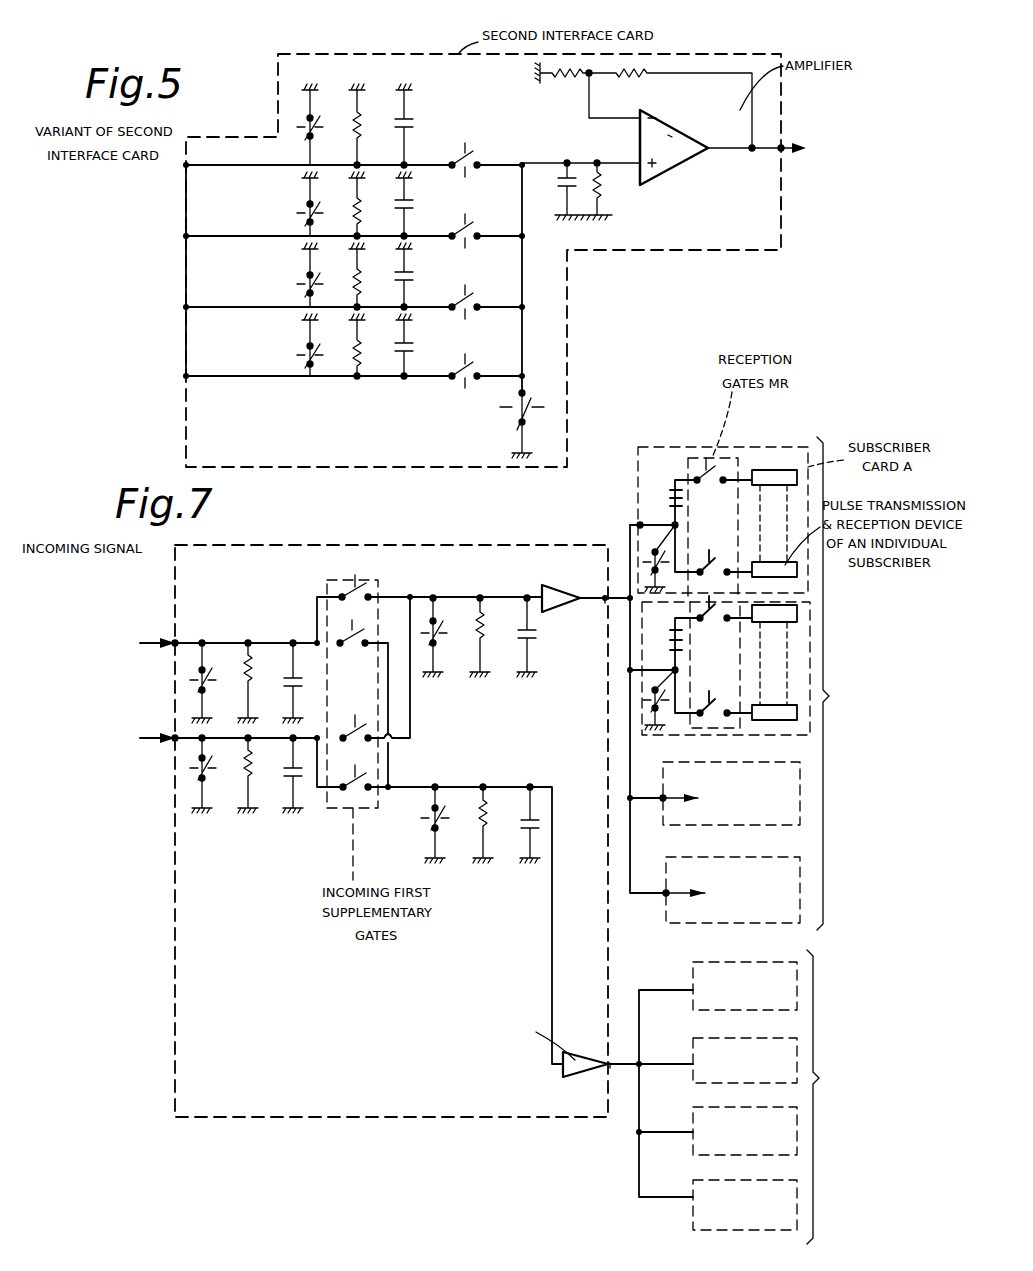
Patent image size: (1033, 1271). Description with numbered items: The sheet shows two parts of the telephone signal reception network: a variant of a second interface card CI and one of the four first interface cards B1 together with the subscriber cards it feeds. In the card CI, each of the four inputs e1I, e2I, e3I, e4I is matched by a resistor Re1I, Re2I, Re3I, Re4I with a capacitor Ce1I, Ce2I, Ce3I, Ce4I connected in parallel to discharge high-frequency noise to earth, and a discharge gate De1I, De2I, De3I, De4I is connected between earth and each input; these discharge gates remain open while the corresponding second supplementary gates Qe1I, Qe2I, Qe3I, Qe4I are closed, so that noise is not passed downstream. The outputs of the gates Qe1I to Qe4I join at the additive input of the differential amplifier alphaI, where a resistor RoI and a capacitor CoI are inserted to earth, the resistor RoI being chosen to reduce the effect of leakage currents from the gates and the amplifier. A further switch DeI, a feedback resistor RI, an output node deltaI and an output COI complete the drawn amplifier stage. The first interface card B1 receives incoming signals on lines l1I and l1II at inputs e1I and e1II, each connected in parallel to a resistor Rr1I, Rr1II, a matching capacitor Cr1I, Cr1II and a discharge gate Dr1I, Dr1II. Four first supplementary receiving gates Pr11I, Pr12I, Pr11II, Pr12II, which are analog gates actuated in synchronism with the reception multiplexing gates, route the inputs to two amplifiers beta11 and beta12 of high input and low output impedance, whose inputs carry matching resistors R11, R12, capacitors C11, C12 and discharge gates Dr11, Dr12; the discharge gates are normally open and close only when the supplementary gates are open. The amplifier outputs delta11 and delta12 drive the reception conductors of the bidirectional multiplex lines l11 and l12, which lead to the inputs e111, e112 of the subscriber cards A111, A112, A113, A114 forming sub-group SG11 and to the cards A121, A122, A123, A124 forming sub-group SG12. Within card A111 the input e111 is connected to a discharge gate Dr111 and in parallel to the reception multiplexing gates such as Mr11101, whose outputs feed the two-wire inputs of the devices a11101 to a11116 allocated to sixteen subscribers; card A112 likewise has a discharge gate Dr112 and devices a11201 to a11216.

In FIG. 5, the input e1I is at (190, 170).
In FIG. 7, the input e1I is at (178, 640).
In FIG. 5, the input e2I is at (190, 241).
In FIG. 5, the input e3I is at (190, 312).
In FIG. 5, the input e4I is at (190, 381).
In FIG. 5, the discharge gate De1I is at (300, 125).
In FIG. 5, the discharge gate De2I is at (302, 210).
In FIG. 5, the discharge gate De3I is at (302, 281).
In FIG. 5, the discharge gate De4I is at (302, 350).
In FIG. 5, the resistor Re1I is at (362, 115).
In FIG. 5, the resistor Re2I is at (362, 195).
In FIG. 5, the resistor Re3I is at (362, 265).
In FIG. 5, the resistor Re4I is at (362, 338).
In FIG. 5, the capacitor Ce1I is at (410, 118).
In FIG. 5, the capacitor Ce2I is at (410, 204).
In FIG. 5, the capacitor Ce3I is at (409, 276).
In FIG. 5, the capacitor Ce4I is at (410, 347).
In FIG. 5, the second supplementary gate Qe1I is at (472, 158).
In FIG. 5, the second supplementary gate Qe2I is at (472, 228).
In FIG. 5, the second supplementary gate Qe3I is at (472, 298).
In FIG. 5, the second supplementary gate Qe4I is at (472, 366).
In FIG. 5, the switch DeI is at (514, 410).
In FIG. 5, the feedback resistor RI is at (614, 80).
In FIG. 5, the differential amplifier alphaI is at (675, 172).
In FIG. 5, the amplifier output delta I deltaI is at (668, 135).
In FIG. 5, the capacitor CoI is at (560, 178).
In FIG. 5, the resistor RoI is at (604, 192).
In FIG. 5, the output COI is at (763, 138).
In FIG. 5, the second interface card CI is at (782, 205).
In FIG. 7, the first interface card B1 is at (272, 545).
In FIG. 7, the incoming line l1I is at (150, 650).
In FIG. 7, the incoming line l1II is at (152, 745).
In FIG. 7, the input e1II is at (176, 737).
In FIG. 7, the discharge gate Dr1I is at (208, 650).
In FIG. 7, the resistor Rr1I is at (254, 650).
In FIG. 7, the matching capacitor Cr1I is at (298, 670).
In FIG. 7, the switch Dr1II is at (212, 775).
In FIG. 7, the resistor Rr1II is at (256, 770).
In FIG. 7, the capacitor Cr1II is at (300, 775).
In FIG. 7, the first supplementary receiving gate Pr11I is at (366, 577).
In FIG. 7, the first supplementary receiving gate Pr12I is at (365, 624).
In FIG. 7, the first supplementary receiving gate Pr11II is at (362, 726).
In FIG. 7, the first supplementary receiving gate Pr12II is at (365, 778).
In FIG. 7, the discharge gate Dr11 is at (432, 620).
In FIG. 7, the matching resistor R11 is at (475, 620).
In FIG. 7, the capacitor C11 is at (522, 625).
In FIG. 7, the amplifier beta11 is at (558, 604).
In FIG. 7, the amplifier output delta 11 delta11 is at (604, 597).
In FIG. 7, the bidirectional multiplex line l11 is at (607, 604).
In FIG. 7, the discharge gate Dr12 is at (430, 825).
In FIG. 7, the matching resistor R12 is at (478, 812).
In FIG. 7, the capacitor C12 is at (522, 815).
In FIG. 7, the amplifier beta12 is at (560, 1068).
In FIG. 7, the amplifier output delta 12 delta12 is at (610, 1063).
In FIG. 7, the bidirectional multiplex line l12 is at (615, 1068).
In FIG. 7, the subscriber card A111 is at (640, 447).
In FIG. 7, the reception multiplexing gate Mr11101 is at (700, 470).
In FIG. 7, the input e111 is at (638, 523).
In FIG. 7, the device a11101 is at (770, 470).
In FIG. 7, the device a11116 is at (765, 562).
In FIG. 7, the discharge gate Dr111 is at (666, 555).
In FIG. 7, the subscriber card A112 is at (808, 610).
In FIG. 7, the input e112 is at (632, 668).
In FIG. 7, the subscriber element a11201 is at (762, 622).
In FIG. 7, the subscriber element a11216 is at (772, 705).
In FIG. 7, the switch Dr112 is at (668, 695).
In FIG. 7, the subscriber card A113 is at (740, 770).
In FIG. 7, the subscriber card A114 is at (735, 866).
In FIG. 7, the sub-group SG11 is at (845, 683).
In FIG. 7, the subscriber card A121 is at (740, 962).
In FIG. 7, the subscriber card A122 is at (744, 1042).
In FIG. 7, the subscriber card A123 is at (742, 1112).
In FIG. 7, the subscriber card A124 is at (742, 1185).
In FIG. 7, the sub-group SG12 is at (836, 1097).